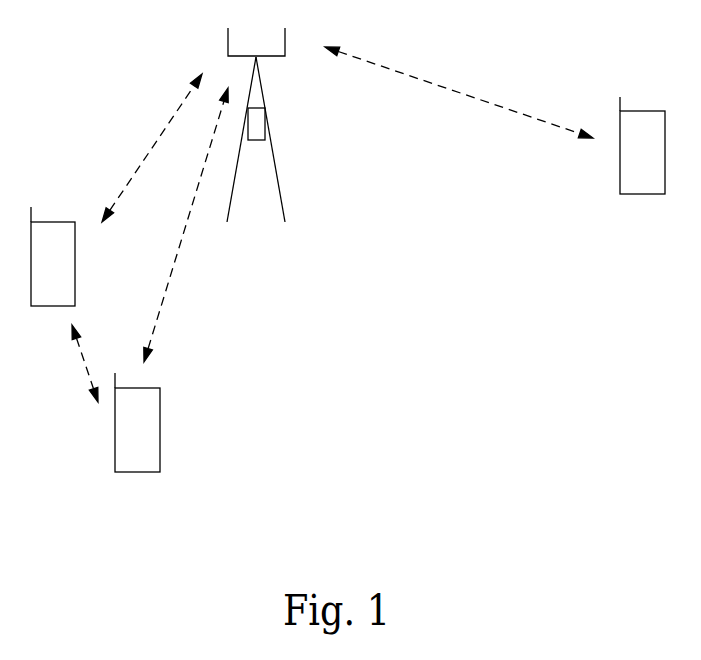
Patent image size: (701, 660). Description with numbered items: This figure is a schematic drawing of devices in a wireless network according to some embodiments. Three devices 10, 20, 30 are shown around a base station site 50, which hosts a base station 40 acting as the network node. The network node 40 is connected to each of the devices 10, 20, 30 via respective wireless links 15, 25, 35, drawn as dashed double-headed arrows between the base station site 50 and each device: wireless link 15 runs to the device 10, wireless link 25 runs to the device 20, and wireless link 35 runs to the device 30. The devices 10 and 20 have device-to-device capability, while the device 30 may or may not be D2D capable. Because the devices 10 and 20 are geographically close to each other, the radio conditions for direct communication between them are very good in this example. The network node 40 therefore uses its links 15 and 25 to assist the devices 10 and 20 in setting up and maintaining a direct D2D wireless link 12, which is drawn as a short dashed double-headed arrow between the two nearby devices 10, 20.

The device 10 is at (53, 256).
The D2D wireless link 12 is at (73, 363).
The wireless link 15 is at (152, 148).
The device 20 is at (137, 422).
The wireless link 25 is at (186, 225).
The device 30 is at (642, 145).
The wireless link 35 is at (459, 92).
The base station 40 is at (268, 116).
The base station site 50 is at (295, 176).